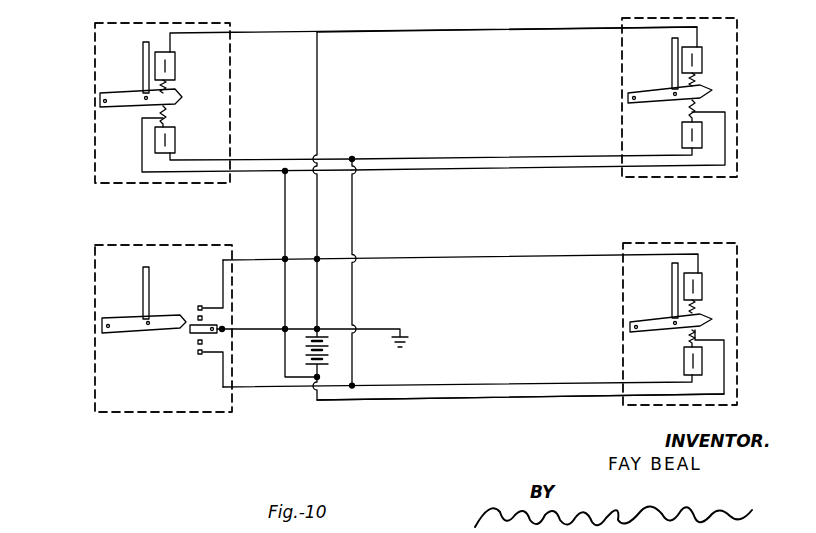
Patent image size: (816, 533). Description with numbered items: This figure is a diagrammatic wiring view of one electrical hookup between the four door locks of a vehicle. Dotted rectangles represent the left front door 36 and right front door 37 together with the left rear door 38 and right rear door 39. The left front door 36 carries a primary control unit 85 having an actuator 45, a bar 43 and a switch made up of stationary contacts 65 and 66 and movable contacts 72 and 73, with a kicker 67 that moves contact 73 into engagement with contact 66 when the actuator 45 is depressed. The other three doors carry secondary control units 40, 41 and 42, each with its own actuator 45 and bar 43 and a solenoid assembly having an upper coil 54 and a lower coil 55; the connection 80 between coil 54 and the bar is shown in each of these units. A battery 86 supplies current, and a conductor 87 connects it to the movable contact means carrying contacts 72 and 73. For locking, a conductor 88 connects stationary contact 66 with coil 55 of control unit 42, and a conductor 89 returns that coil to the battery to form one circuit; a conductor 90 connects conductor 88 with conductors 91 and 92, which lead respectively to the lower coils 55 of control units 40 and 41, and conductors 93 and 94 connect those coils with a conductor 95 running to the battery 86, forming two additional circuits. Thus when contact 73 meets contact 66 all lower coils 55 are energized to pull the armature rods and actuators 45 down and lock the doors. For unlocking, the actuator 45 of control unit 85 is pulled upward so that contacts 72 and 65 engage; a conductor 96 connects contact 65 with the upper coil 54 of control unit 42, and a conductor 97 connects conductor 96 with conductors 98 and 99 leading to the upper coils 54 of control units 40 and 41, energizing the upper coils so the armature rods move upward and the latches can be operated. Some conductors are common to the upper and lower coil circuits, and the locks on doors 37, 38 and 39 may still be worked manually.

The left front door 36 is at (100, 278).
The right front door 37 is at (106, 51).
The left rear door 38 is at (725, 274).
The right rear door 39 is at (728, 48).
The control unit 40 is at (105, 37).
The control unit 41 is at (733, 31).
The control unit 42 is at (721, 251).
The bar 43 is at (132, 97).
The actuator 45 is at (143, 66).
The upper coil 54 is at (167, 70).
The lower coil 55 is at (167, 141).
The stationary contact 65 is at (197, 306).
The stationary contact 66 is at (198, 358).
The kicker 67 is at (190, 334).
The movable contact 72 is at (196, 316).
The movable contact 73 is at (197, 345).
The connection 80 is at (163, 111).
The control unit 85 is at (106, 260).
The battery 86 is at (325, 347).
The conductor 87 is at (246, 329).
The conductor 88 is at (262, 389).
The conductor 89 is at (555, 398).
The conductor 90 is at (353, 294).
The conductor 91 is at (295, 159).
The conductor 92 is at (573, 160).
The conductor 93 is at (258, 174).
The conductor 94 is at (513, 168).
The conductor 95 is at (285, 214).
The conductor 96 is at (262, 259).
The conductor 97 is at (318, 108).
The conductor 98 is at (284, 35).
The conductor 99 is at (572, 28).